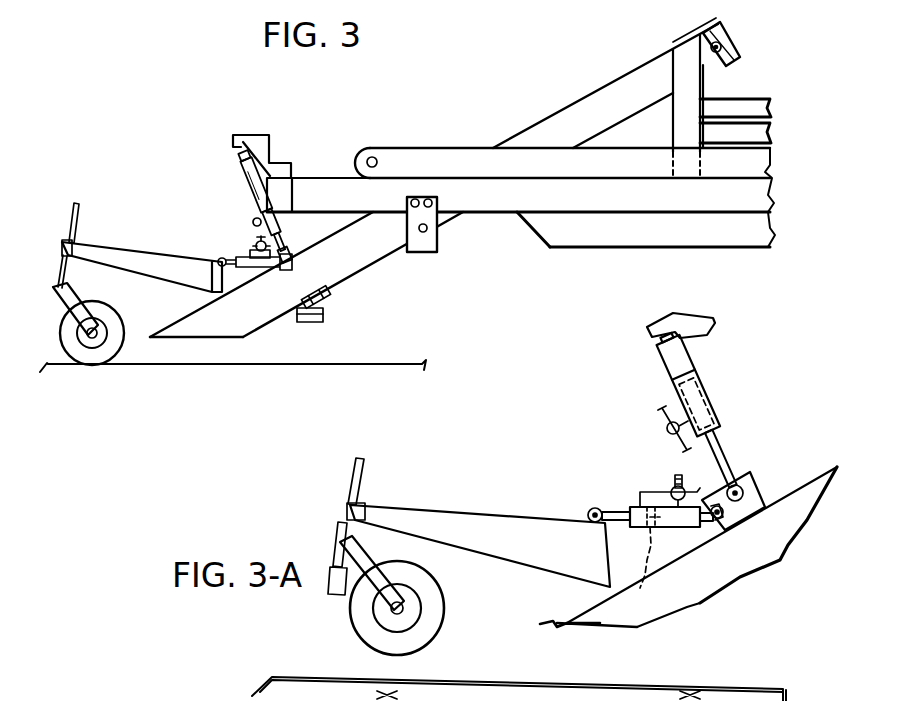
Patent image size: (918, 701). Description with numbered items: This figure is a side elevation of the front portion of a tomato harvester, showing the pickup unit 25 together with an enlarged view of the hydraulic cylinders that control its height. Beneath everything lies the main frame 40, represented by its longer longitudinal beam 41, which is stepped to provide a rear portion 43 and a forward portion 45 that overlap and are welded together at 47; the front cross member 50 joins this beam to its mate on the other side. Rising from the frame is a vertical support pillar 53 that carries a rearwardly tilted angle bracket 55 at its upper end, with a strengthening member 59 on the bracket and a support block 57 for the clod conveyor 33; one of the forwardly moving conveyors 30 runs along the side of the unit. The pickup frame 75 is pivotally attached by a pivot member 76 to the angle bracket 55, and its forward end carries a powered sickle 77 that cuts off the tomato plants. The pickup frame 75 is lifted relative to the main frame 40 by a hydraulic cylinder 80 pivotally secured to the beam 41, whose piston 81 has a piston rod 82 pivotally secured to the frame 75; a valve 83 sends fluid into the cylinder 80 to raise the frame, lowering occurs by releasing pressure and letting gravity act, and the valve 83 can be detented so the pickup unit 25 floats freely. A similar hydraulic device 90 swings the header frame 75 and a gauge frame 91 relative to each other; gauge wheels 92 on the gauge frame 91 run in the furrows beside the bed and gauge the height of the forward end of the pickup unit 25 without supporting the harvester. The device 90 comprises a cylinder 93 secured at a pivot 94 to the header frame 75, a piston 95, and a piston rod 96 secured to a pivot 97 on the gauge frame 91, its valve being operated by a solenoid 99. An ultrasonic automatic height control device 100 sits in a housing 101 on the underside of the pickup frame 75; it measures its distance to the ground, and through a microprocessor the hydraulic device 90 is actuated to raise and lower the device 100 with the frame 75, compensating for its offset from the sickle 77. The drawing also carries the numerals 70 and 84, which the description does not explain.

In FIG. 3, the pickup unit 25 is at (375, 275).
In FIG. 3, the forwardly moving conveyor 30 is at (392, 149).
In FIG. 3, the clod conveyor 33 is at (724, 99).
In FIG. 3, the main frame 40 is at (738, 266).
In FIG. 3, the longitudinal beam 41 is at (527, 198).
In FIG. 3, the rear portion 43 is at (706, 240).
In FIG. 3, the forward portion 45 is at (356, 163).
In FIG. 3, the weld 47 is at (546, 210).
In FIG. 3, the front cross member 50 is at (293, 190).
In FIG. 3, the vertical support pillar 53 is at (680, 118).
In FIG. 3, the angle bracket 55 is at (698, 33).
In FIG. 3, the support block 57 is at (750, 133).
In FIG. 3, the strengthening member 59 is at (742, 7).
In FIG. 3-A, the base frame 70 is at (519, 689).
In FIG. 3, the pickup frame 75 is at (587, 93).
In FIG. 3-A, the pickup frame 75 is at (698, 603).
In FIG. 3, the pivot member 76 is at (740, 42).
In FIG. 3, the powered sickle 77 is at (148, 340).
In FIG. 3-A, the powered sickle 77 is at (557, 622).
In FIG. 3, the hydraulic cylinder 80 is at (255, 192).
In FIG. 3-A, the hydraulic cylinder 80 is at (672, 358).
In FIG. 3-A, the piston 81 is at (690, 382).
In FIG. 3-A, the piston rod 82 is at (720, 447).
In FIG. 3-A, the valve 83 is at (667, 428).
In FIG. 3-A, the pivot plate 84 is at (745, 480).
In FIG. 3-A, the hydraulic device 90 is at (628, 485).
In FIG. 3, the gauge frame 91 is at (142, 260).
In FIG. 3-A, the gauge frame 91 is at (467, 527).
In FIG. 3, the gauge wheel 92 is at (110, 315).
In FIG. 3-A, the gauge wheel 92 is at (427, 593).
In FIG. 3, the cylinder 93 is at (247, 254).
In FIG. 3-A, the cylinder 93 is at (677, 528).
In FIG. 3-A, the pivot 94 is at (715, 525).
In FIG. 3-A, the piston 95 is at (647, 583).
In FIG. 3-A, the piston rod 96 is at (612, 502).
In FIG. 3-A, the pivot 97 is at (597, 513).
In FIG. 3-A, the solenoid 99 is at (680, 474).
In FIG. 3, the automatic height control device 100 is at (330, 302).
In FIG. 3, the housing 101 is at (330, 304).